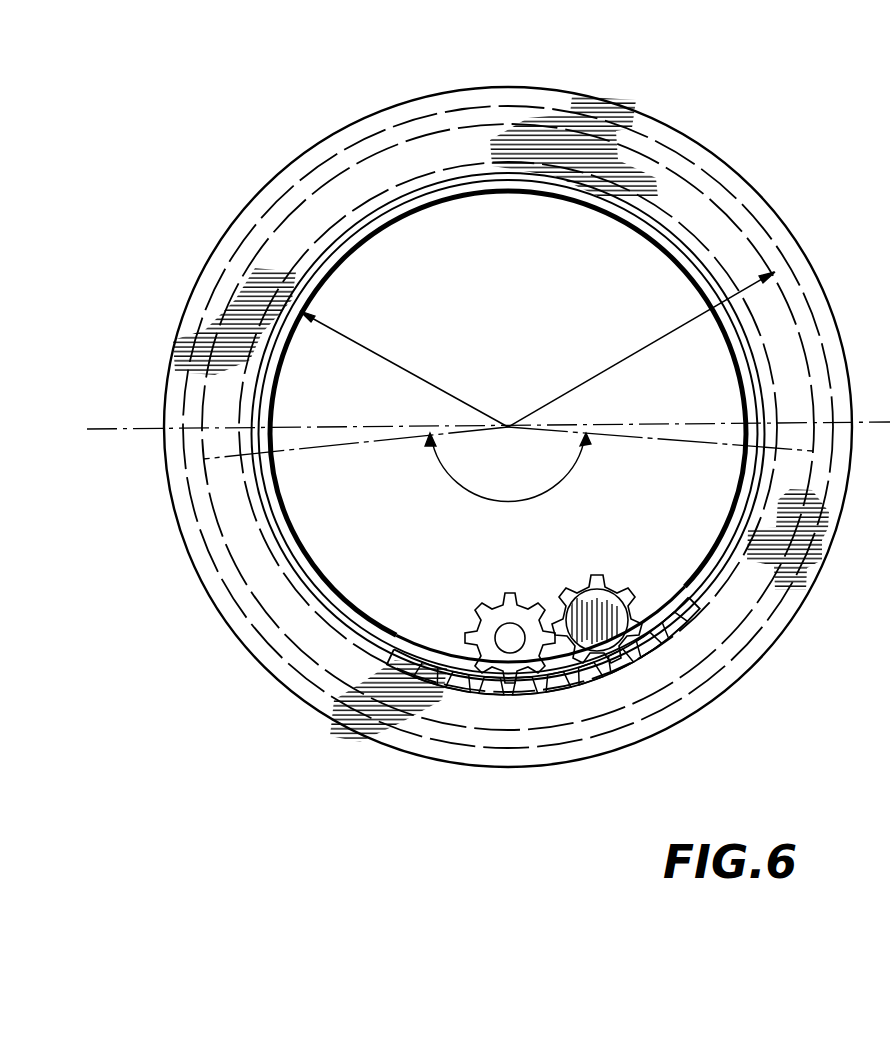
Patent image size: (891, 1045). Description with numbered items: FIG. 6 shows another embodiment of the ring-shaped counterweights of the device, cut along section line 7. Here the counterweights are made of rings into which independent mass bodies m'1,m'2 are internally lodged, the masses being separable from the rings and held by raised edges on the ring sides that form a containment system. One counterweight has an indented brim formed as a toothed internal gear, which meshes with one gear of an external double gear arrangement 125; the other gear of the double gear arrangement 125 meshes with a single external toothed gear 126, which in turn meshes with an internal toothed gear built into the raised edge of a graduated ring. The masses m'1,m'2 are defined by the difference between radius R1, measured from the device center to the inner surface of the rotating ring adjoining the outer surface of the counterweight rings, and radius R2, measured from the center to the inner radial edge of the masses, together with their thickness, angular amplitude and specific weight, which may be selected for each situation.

The external double gear arrangement 125 is at (612, 586).
The single external toothed gear 126 is at (494, 604).
The section line 7- 7 is at (509, 79).
The radius to inner surface of rotating ring R1 is at (604, 364).
The radius to inner radial edge of masses R2 is at (464, 392).
The independent mass bodies m'1,m'2 is at (507, 419).